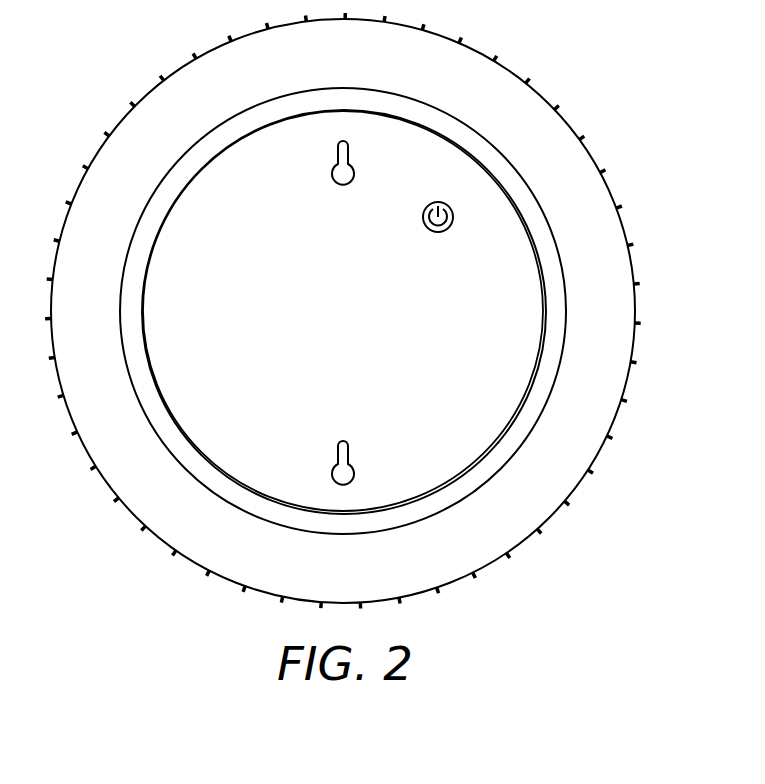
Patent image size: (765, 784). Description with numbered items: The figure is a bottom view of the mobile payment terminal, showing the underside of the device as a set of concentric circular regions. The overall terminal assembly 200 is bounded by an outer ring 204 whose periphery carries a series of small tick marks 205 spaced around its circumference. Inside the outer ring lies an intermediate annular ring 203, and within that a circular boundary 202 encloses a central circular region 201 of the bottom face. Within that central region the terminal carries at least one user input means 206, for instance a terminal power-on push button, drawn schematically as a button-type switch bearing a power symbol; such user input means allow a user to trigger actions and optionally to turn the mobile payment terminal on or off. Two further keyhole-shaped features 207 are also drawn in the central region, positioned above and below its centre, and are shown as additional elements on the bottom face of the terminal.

The thermostat device 200 is at (375, 313).
The display area 201 is at (450, 480).
The display bezel 202 is at (500, 455).
The inner ring 203 is at (568, 340).
The outer rotatable ring 204 is at (612, 228).
The tick marks 205 is at (527, 80).
The user input means 206 is at (422, 217).
The temperature indicator icon 207 is at (333, 170).